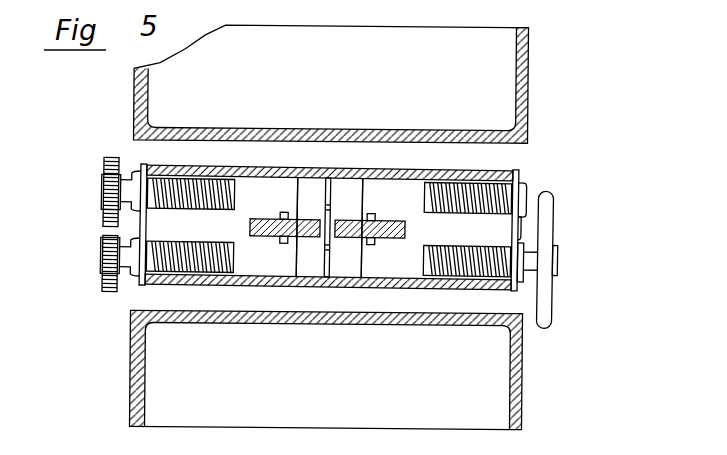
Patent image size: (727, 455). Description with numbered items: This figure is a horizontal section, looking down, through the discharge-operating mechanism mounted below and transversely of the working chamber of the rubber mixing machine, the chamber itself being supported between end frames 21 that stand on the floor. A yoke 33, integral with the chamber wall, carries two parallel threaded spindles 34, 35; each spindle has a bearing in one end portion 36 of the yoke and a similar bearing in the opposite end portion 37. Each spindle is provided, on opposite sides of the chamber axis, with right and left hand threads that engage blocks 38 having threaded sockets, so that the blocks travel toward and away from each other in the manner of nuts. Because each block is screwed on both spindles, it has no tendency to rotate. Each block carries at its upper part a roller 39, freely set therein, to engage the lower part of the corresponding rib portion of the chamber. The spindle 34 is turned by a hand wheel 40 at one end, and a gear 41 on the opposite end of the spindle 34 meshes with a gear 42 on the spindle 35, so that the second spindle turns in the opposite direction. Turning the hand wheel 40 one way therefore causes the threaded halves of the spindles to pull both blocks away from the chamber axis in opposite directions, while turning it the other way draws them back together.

The end frame 21 is at (329, 226).
The yoke 33 is at (508, 167).
The threaded spindle 34 is at (495, 273).
The threaded spindle 35 is at (524, 184).
The end portion of yoke 36 is at (524, 199).
The end portion of yoke 37 is at (138, 171).
The block 38 is at (281, 266).
The roller 39 is at (272, 236).
The hand wheel 40 is at (553, 224).
The gear 41 is at (103, 270).
The gear 42 is at (103, 210).